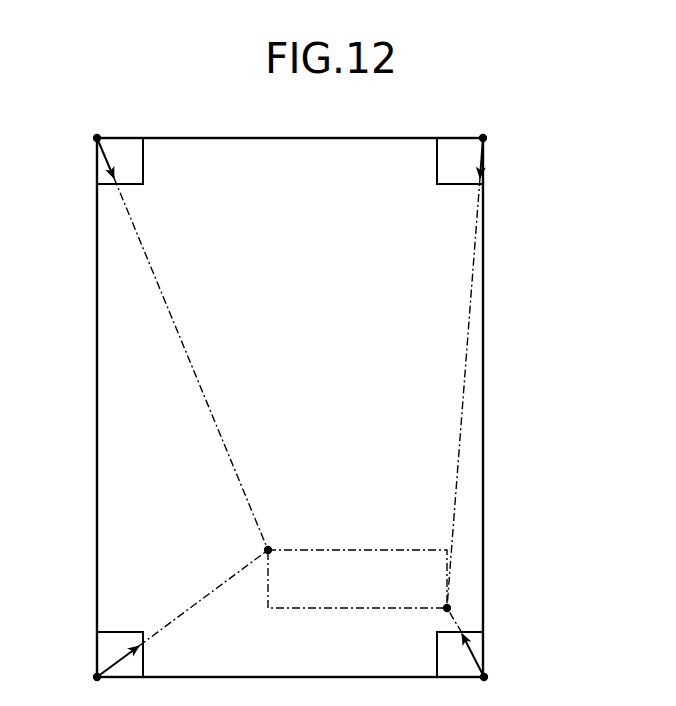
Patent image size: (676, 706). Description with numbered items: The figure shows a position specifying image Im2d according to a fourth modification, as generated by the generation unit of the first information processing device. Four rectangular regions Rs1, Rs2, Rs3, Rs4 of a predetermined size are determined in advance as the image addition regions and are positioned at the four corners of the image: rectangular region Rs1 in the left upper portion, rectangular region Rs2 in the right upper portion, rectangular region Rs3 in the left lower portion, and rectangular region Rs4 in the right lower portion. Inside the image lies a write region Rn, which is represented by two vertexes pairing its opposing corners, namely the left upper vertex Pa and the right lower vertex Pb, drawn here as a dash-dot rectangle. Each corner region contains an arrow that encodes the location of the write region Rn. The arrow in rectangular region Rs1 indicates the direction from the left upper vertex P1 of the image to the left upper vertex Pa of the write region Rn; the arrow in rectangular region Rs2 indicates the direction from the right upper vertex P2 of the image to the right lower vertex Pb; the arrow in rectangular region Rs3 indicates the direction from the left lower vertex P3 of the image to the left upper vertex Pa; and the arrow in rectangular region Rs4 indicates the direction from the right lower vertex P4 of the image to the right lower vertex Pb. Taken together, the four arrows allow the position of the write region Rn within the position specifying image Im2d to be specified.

The position specifying image Im2d is at (547, 220).
The left upper vertex of the image P1 is at (93, 139).
The right upper vertex of the image P2 is at (488, 138).
The left lower vertex of the image P3 is at (93, 678).
The right lower vertex of the image P4 is at (489, 678).
The rectangular region Rs1 is at (124, 147).
The rectangular region Rs2 is at (451, 147).
The rectangular region Rs3 is at (107, 648).
The rectangular region Rs4 is at (478, 643).
The left upper vertex of the write region Pa is at (263, 550).
The right lower vertex of the write region Pb is at (451, 607).
The write region Rn is at (412, 548).